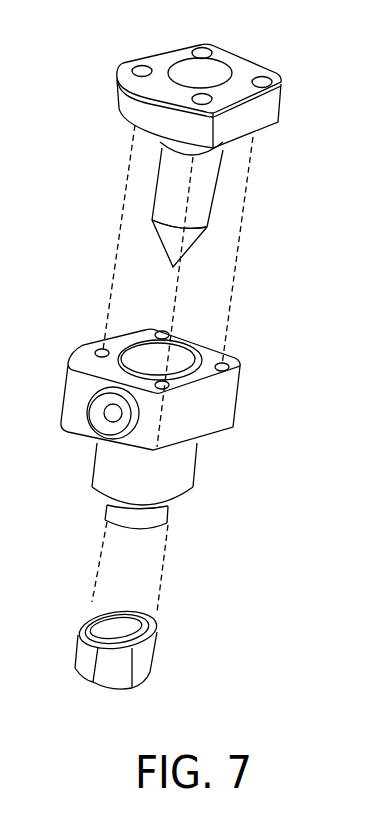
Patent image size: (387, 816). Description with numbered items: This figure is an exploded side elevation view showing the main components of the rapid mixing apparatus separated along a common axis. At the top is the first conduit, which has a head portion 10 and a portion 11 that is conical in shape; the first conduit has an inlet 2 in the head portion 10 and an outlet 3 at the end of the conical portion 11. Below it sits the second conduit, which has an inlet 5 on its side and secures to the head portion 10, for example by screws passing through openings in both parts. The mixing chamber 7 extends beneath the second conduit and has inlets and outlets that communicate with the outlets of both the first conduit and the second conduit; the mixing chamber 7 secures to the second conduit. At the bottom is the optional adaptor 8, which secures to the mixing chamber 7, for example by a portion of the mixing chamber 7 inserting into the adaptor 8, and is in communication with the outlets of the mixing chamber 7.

The inlet 2 is at (212, 70).
The outlet 3 is at (152, 222).
The inlet 5 is at (85, 435).
The mixing chamber 7 is at (232, 441).
The adaptor 8 is at (140, 675).
The head portion 10 is at (282, 108).
The conical portion 11 is at (220, 182).